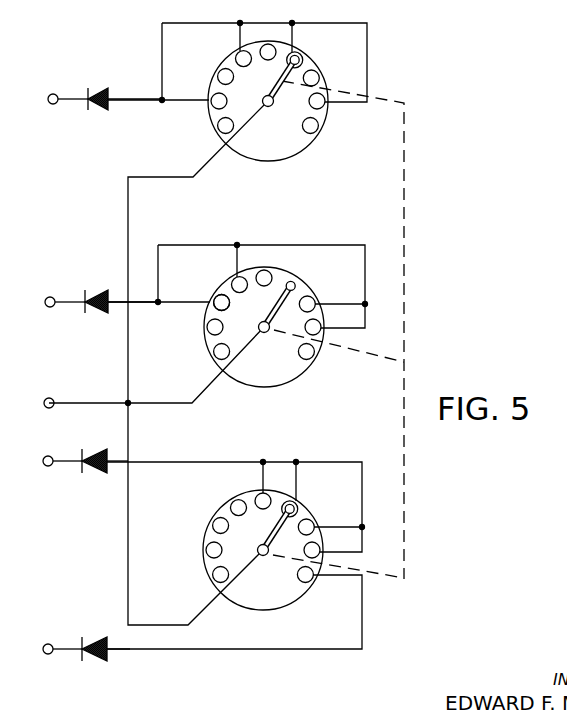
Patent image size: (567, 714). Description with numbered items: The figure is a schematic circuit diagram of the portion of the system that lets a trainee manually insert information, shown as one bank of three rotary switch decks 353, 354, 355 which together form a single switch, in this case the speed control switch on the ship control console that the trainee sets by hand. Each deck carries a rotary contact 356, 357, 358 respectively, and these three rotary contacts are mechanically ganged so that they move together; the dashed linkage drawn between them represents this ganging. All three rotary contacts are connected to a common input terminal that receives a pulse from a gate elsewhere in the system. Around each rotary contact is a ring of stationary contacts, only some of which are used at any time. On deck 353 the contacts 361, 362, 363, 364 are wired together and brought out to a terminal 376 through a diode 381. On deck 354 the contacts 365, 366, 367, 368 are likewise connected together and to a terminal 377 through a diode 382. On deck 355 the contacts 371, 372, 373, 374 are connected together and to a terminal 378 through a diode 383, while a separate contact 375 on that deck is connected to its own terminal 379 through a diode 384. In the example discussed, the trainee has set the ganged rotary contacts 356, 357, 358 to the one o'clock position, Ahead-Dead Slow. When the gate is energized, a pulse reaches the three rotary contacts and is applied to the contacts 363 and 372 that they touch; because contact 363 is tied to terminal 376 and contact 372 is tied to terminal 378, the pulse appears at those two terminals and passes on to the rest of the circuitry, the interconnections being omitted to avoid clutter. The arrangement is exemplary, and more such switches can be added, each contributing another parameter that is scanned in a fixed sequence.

The rotary switch deck 353 is at (282, 143).
The rotary switch deck 354 is at (278, 372).
The rotary switch deck 355 is at (277, 600).
The rotary contact 356 is at (285, 82).
The rotary contact 357 is at (285, 285).
The rotary contact 358 is at (270, 556).
The stationary contact 361 is at (212, 104).
The stationary contact 362 is at (238, 54).
The stationary contact 363 is at (298, 54).
The stationary contact 364 is at (320, 105).
The stationary contact 365 is at (218, 307).
The stationary contact 366 is at (233, 282).
The stationary contact 367 is at (313, 301).
The stationary contact 368 is at (315, 343).
The stationary contact 371 is at (256, 492).
The stationary contact 372 is at (294, 503).
The stationary contact 373 is at (312, 523).
The stationary contact 374 is at (318, 563).
The stationary contact 375 is at (310, 582).
The terminal 376 is at (30, 84).
The terminal 377 is at (22, 284).
The terminal 378 is at (8, 443).
The terminal 379 is at (20, 639).
The diode 381 is at (110, 106).
The diode 382 is at (109, 309).
The diode 383 is at (109, 471).
The diode 384 is at (109, 660).